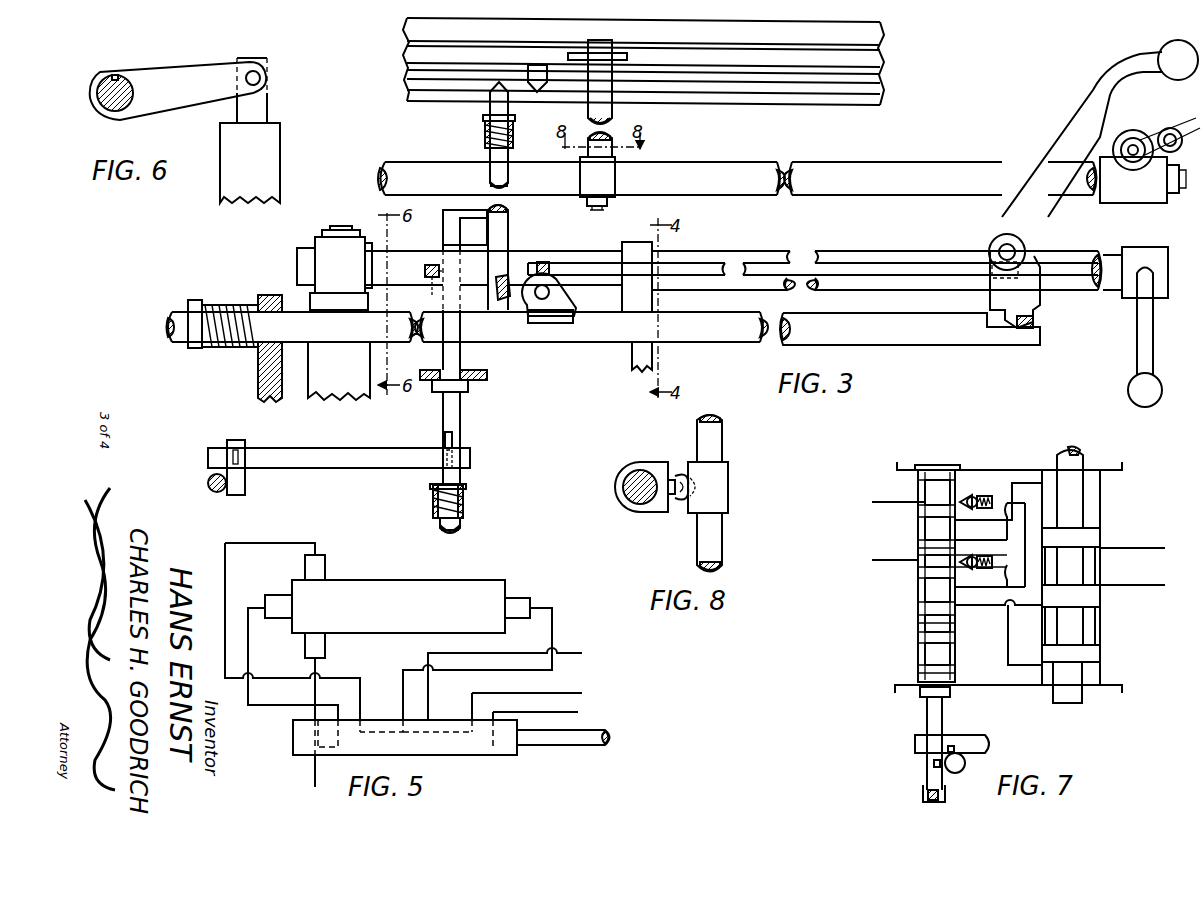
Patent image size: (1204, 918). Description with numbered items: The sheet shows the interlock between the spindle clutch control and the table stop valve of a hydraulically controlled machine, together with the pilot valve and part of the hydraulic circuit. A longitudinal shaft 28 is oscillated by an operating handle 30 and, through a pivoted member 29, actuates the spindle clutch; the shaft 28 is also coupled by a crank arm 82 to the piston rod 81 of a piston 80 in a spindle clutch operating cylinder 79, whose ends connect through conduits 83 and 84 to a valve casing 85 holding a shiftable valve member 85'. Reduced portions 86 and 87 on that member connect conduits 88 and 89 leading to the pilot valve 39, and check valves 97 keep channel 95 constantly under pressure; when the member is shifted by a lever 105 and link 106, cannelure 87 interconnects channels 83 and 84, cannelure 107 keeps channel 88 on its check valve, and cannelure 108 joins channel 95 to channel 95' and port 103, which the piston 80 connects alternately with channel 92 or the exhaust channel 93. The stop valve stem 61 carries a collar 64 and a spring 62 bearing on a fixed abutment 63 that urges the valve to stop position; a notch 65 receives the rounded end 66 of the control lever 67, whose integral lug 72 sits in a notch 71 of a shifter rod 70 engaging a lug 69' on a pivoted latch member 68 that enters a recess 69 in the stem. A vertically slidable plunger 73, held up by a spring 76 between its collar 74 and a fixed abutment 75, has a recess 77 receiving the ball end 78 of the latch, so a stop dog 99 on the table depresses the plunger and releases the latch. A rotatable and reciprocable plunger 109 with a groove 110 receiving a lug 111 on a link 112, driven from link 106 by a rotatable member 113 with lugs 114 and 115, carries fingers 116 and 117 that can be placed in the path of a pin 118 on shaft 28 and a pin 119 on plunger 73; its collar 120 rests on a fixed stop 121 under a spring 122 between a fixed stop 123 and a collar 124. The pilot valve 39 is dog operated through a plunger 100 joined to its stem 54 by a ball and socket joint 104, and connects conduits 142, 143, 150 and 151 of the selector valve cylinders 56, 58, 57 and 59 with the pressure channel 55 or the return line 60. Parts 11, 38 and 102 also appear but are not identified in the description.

In FIG. 3, the rail 11 is at (785, 92).
In FIG. 3, the longitudinal shaft 28 is at (906, 240).
In FIG. 6, the longitudinal shaft 28 is at (100, 112).
In FIG. 3, the pivoted member 29 is at (653, 355).
In FIG. 3, the operating handle 30 is at (1137, 332).
In FIG. 5, the valve body 38 is at (458, 565).
In FIG. 5, the pilot valve 39 is at (505, 750).
In FIG. 3, the pilot valve stem 54 is at (860, 170).
In FIG. 8, the pilot valve stem 54 is at (718, 432).
In FIG. 5, the pilot valve stem 54 is at (578, 745).
In FIG. 5, the pressure channel 55 is at (580, 648).
In FIG. 5, the cylinder 56 is at (276, 612).
In FIG. 5, the cylinder 57 is at (325, 650).
In FIG. 5, the cylinder 58 is at (518, 600).
In FIG. 5, the cylinder 59 is at (325, 565).
In FIG. 5, the return line 60 is at (316, 770).
In FIG. 3, the valve stem 61 is at (497, 343).
In FIG. 3, the spring 62 is at (240, 283).
In FIG. 3, the fixed abutment 63 is at (258, 366).
In FIG. 3, the collar 64 is at (200, 300).
In FIG. 3, the elongated notch 65 is at (985, 327).
In FIG. 3, the rounded end 66 is at (1034, 318).
In FIG. 3, the control lever 67 is at (1095, 90).
In FIG. 3, the pivoted latch member 68 is at (565, 296).
In FIG. 3, the recess 69 is at (550, 340).
In FIG. 3, the lug 69' is at (553, 252).
In FIG. 3, the shifter rod 70 is at (605, 238).
In FIG. 3, the notch 71 is at (1003, 268).
In FIG. 3, the lug 72 is at (1015, 258).
In FIG. 3, the vertically slidable plunger 73 is at (497, 83).
In FIG. 3, the collar 74 is at (515, 119).
In FIG. 3, the fixed abutment 75 is at (512, 150).
In FIG. 3, the spring 76 is at (513, 133).
In FIG. 3, the recess 77 is at (500, 275).
In FIG. 3, the ball end 78 is at (496, 288).
In FIG. 7, the spindle clutch operating cylinder 79 is at (1100, 512).
In FIG. 7, the piston 80 is at (1087, 538).
In FIG. 6, the piston rod 81 is at (258, 113).
In FIG. 7, the piston rod 81 is at (1073, 500).
In FIG. 3, the crank arm 82 is at (335, 250).
In FIG. 6, the crank arm 82 is at (184, 52).
In FIG. 7, the conduit 83 is at (1010, 645).
In FIG. 7, the conduit 84 is at (1036, 456).
In FIG. 7, the valve casing 85 is at (915, 616).
In FIG. 7, the shiftable valve member 85' is at (914, 653).
In FIG. 7, the reduced portion 86 is at (925, 490).
In FIG. 7, the reduced portion 87 is at (928, 530).
In FIG. 5, the conduit 88 is at (582, 693).
In FIG. 7, the conduit 88 is at (895, 551).
In FIG. 5, the conduit 89 is at (578, 712).
In FIG. 7, the conduit 89 is at (892, 492).
In FIG. 7, the channel 92 is at (1140, 585).
In FIG. 7, the exhaust channel 93 is at (1170, 536).
In FIG. 7, the constant pressure channel 95 is at (989, 597).
In FIG. 7, the channel 95' is at (982, 622).
In FIG. 7, the check valves 97 is at (968, 497).
In FIG. 3, the stop dog 99 is at (528, 68).
In FIG. 3, the rotary and reciprocable plunger 100 is at (605, 72).
In FIG. 8, the rotary and reciprocable plunger 100 is at (668, 440).
In FIG. 3, the bearing block 102 is at (1186, 120).
In FIG. 7, the port 103 is at (1040, 608).
In FIG. 8, the ball and socket joint 104 is at (680, 506).
In FIG. 7, the lever 105 is at (940, 806).
In FIG. 3, the link 106 is at (215, 493).
In FIG. 7, the link 106 is at (927, 712).
In FIG. 7, the cannelure 107 is at (923, 565).
In FIG. 7, the cannelure 108 is at (930, 590).
In FIG. 3, the reciprocable and rotatable plunger 109 is at (452, 410).
In FIG. 3, the longitudinal groove 110 is at (445, 441).
In FIG. 3, the lug 111 is at (447, 460).
In FIG. 3, the reciprocable link 112 is at (345, 438).
In FIG. 7, the reciprocable link 112 is at (978, 742).
In FIG. 3, the rotatable member 113 is at (245, 488).
In FIG. 7, the rotatable member 113 is at (957, 771).
In FIG. 7, the lug 114 is at (934, 765).
In FIG. 7, the lug 115 is at (953, 746).
In FIG. 3, the finger 116 is at (432, 289).
In FIG. 3, the finger 117 is at (478, 214).
In FIG. 3, the pin 118 is at (430, 266).
In FIG. 3, the pin 119 is at (474, 231).
In FIG. 3, the collar 120 is at (468, 386).
In FIG. 3, the fixed stop 121 is at (430, 390).
In FIG. 3, the spring 122 is at (463, 492).
In FIG. 3, the fixed stop 123 is at (440, 524).
In FIG. 3, the collar 124 is at (432, 487).
In FIG. 5, the conduit 142 is at (245, 697).
In FIG. 5, the conduit 143 is at (553, 622).
In FIG. 5, the conduit 150 is at (315, 695).
In FIG. 5, the conduit 151 is at (283, 543).